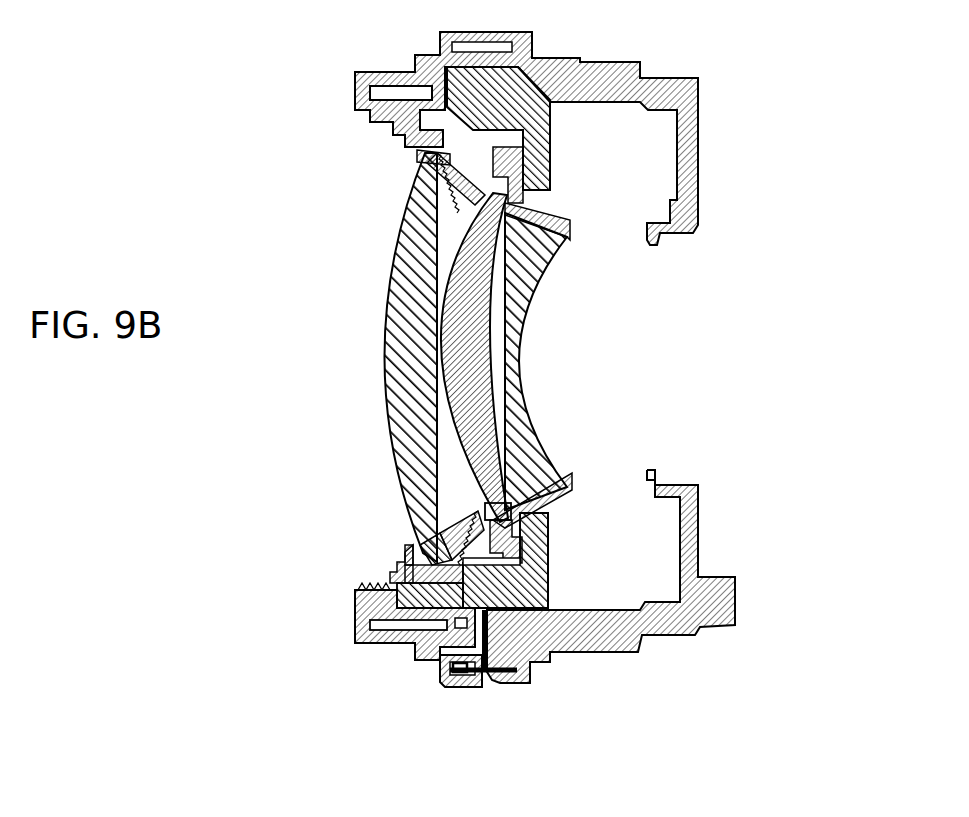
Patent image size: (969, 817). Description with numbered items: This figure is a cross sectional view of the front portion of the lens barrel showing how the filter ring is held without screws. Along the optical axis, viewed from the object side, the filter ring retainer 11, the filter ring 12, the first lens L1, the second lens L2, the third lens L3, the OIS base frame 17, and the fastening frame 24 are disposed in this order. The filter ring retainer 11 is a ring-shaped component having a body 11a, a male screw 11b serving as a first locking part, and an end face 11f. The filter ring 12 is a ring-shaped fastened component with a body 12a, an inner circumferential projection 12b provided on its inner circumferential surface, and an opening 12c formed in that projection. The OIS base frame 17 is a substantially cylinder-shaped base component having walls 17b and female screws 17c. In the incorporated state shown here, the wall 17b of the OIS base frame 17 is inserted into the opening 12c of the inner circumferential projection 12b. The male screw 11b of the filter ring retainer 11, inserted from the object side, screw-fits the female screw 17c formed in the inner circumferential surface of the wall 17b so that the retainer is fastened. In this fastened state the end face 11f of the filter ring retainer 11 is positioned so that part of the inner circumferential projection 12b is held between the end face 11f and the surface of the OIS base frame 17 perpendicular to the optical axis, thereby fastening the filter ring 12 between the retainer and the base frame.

The first lens L1 is at (405, 357).
The second lens L2 is at (443, 313).
The third lens L3 is at (507, 272).
The filter ring retainer 11 is at (392, 558).
The body 11a is at (393, 577).
The male screw 11b is at (414, 578).
The end face 11f is at (492, 561).
The filter ring 12 is at (357, 657).
The body 12a is at (355, 608).
The inner circumferential projection 12b is at (490, 612).
The opening 12c is at (460, 672).
The OIS base frame 17 is at (557, 585).
The wall 17b is at (410, 596).
The female screw 17c is at (408, 558).
The fastening frame 24 is at (607, 663).